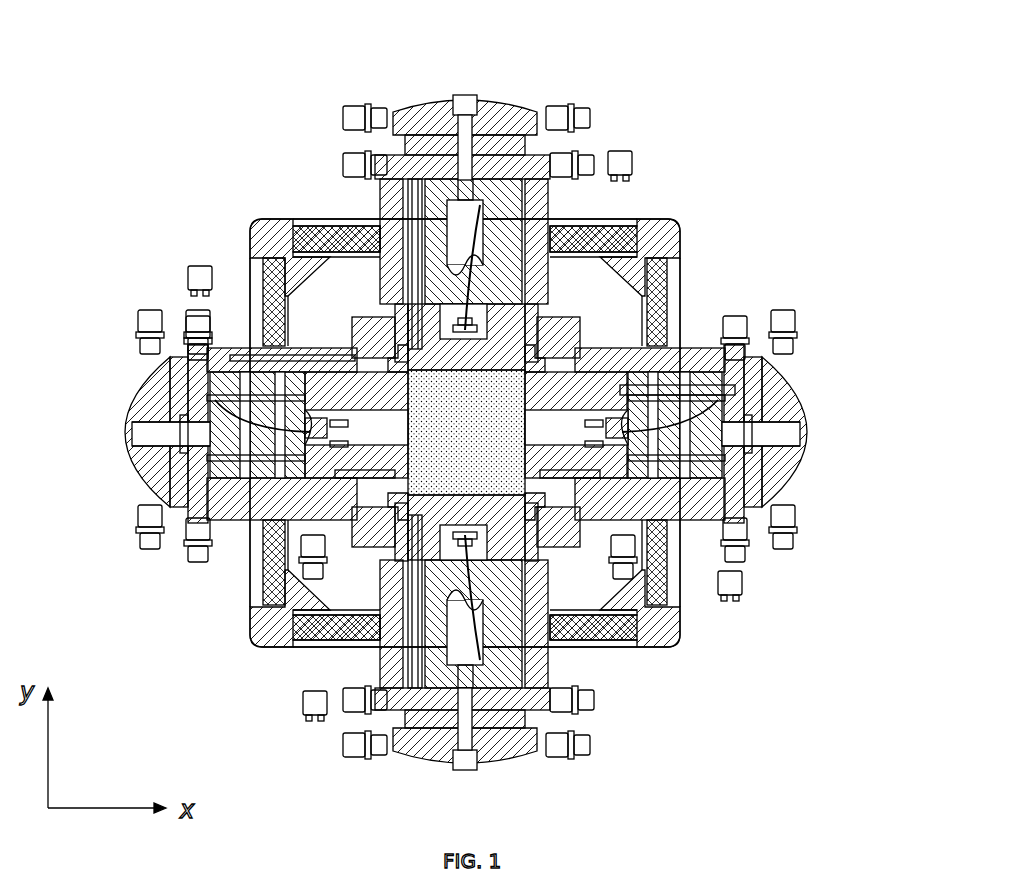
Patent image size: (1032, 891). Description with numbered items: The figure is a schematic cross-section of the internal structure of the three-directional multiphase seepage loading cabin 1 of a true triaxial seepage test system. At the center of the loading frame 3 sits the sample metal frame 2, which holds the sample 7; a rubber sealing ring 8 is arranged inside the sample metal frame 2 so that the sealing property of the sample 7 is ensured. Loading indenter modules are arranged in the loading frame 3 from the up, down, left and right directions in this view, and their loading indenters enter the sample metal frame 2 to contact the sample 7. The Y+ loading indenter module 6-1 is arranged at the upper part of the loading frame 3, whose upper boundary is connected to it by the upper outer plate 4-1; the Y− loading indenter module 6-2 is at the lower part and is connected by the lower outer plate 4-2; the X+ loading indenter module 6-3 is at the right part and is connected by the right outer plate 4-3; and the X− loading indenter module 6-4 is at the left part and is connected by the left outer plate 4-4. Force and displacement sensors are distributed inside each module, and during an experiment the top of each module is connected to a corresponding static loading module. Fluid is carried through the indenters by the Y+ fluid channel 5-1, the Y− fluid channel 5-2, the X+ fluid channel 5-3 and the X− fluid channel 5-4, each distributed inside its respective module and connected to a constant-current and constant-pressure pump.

The three-directional multiphase seepage loading cabin 1 is at (198, 223).
The sample metal frame 2 is at (345, 315).
The loading frame 3 is at (466, 432).
The upper outer plate 4-1 is at (603, 233).
The lower outer plate 4-2 is at (607, 633).
The right outer plate 4-3 is at (675, 600).
The left outer plate 4-4 is at (260, 607).
The Y+ fluid channel 5-1 is at (430, 200).
The Y− fluid channel 5-2 is at (520, 680).
The X+ fluid channel 5-3 is at (703, 382).
The X− fluid channel 5-4 is at (283, 480).
The Y+ loading indenter module 6-1 is at (495, 101).
The Y− loading indenter module 6-2 is at (510, 753).
The X+ loading indenter module 6-3 is at (790, 415).
The X− loading indenter module 6-4 is at (135, 458).
The sample 7 is at (515, 434).
The rubber sealing ring 8 is at (543, 357).